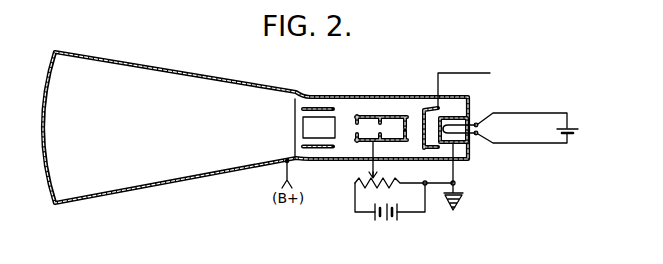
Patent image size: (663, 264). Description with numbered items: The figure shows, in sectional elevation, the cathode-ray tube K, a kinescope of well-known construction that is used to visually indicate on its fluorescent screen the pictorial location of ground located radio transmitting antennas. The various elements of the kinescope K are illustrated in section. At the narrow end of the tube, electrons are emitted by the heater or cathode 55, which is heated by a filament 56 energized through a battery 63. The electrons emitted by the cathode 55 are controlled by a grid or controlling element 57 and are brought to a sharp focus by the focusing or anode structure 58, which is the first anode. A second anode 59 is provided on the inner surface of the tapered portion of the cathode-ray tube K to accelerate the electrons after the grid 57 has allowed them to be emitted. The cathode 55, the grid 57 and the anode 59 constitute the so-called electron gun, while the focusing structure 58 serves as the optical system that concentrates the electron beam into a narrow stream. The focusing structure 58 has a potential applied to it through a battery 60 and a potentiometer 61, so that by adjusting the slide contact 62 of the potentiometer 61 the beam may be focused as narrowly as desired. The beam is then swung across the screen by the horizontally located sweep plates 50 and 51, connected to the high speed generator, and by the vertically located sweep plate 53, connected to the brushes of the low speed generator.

The cathode-ray tube K is at (255, 116).
The second anode 59 is at (92, 56).
The sweep plate 50 is at (316, 108).
The sweep plate 51 is at (303, 147).
The sweep plate 53 is at (305, 125).
The cathode 55 is at (450, 117).
The filament 56 is at (477, 122).
The grid 57 is at (423, 109).
The focusing structure 58 is at (367, 115).
The battery 60 is at (377, 217).
The potentiometer 61 is at (404, 176).
The slide contact 62 is at (369, 176).
The battery 63 is at (577, 118).